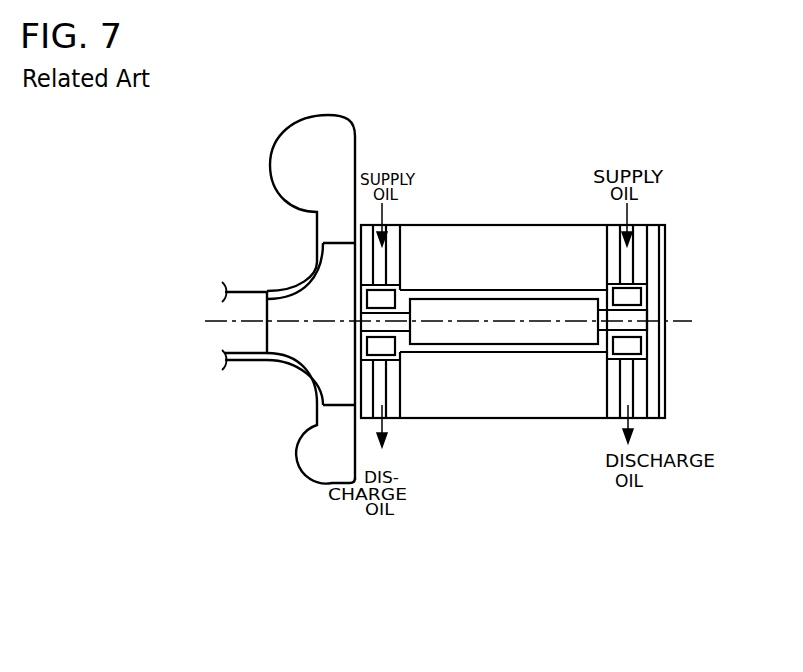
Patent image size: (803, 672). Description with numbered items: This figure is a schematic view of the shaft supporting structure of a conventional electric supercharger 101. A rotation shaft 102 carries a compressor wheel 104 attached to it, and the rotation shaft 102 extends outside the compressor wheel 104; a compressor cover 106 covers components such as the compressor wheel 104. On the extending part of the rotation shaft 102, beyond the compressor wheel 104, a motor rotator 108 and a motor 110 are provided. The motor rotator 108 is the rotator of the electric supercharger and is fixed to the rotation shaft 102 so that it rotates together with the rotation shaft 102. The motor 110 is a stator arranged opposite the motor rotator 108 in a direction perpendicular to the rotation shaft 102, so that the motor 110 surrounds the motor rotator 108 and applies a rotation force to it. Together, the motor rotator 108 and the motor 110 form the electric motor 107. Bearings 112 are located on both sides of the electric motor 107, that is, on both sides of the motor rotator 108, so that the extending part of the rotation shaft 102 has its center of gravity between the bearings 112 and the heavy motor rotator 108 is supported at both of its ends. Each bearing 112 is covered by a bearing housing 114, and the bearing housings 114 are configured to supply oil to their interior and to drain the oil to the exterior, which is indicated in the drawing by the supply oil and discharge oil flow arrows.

The electric supercharger 101 is at (590, 98).
The rotation shaft 102 is at (635, 317).
The compressor wheel 104 is at (337, 387).
The compressor cover 106 is at (305, 373).
The electric motor 107 is at (556, 216).
The motor rotator 108 is at (482, 337).
The motor 110 is at (459, 245).
The bearings 112 is at (382, 298).
The bearing housings 114 is at (397, 413).